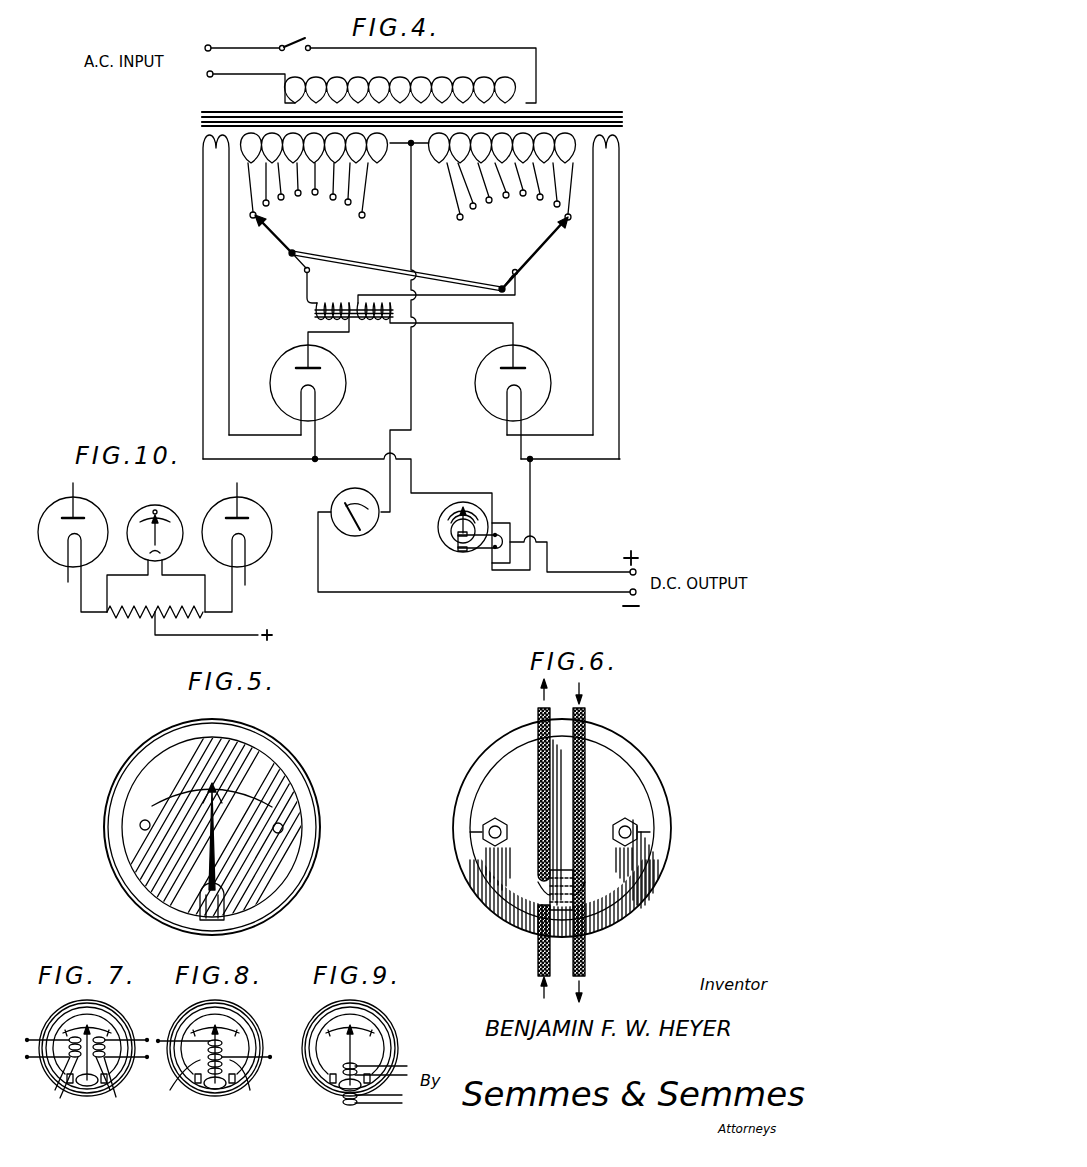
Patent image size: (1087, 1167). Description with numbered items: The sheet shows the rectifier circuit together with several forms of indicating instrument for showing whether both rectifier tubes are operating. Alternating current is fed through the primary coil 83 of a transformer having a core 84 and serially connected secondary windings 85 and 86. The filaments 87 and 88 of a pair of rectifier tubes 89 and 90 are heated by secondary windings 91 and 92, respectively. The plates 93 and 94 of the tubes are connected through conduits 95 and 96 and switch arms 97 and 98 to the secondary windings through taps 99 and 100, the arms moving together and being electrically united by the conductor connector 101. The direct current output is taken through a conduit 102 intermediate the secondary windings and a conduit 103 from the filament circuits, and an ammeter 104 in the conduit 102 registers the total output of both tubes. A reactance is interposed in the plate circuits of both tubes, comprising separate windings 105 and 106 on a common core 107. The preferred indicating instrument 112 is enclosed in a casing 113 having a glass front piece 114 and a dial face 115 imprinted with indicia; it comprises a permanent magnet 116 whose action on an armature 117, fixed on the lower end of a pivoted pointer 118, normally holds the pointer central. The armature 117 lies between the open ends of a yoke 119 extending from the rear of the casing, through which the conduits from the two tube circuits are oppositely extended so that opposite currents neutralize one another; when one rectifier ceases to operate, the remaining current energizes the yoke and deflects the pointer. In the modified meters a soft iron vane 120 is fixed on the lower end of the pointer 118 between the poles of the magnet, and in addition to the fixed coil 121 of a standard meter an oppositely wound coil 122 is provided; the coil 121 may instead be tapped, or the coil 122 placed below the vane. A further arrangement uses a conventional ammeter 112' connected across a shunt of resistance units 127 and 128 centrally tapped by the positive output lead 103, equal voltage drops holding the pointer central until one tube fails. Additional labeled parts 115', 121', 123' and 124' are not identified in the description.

In FIG. 4, the oppositely wound coil 122 is at (300, 42).
In FIG. 7, the oppositely wound coil 122 is at (102, 1082).
In FIG. 4, the primary coil 83 is at (432, 80).
In FIG. 4, the core 84 is at (578, 113).
In FIG. 4, the secondary winding 85 is at (250, 153).
In FIG. 4, the secondary winding 86 is at (574, 158).
In FIG. 4, the filament 87 is at (300, 396).
In FIG. 10, the filament 87 is at (68, 546).
In FIG. 4, the filament 88 is at (508, 400).
In FIG. 10, the filament 88 is at (248, 548).
In FIG. 4, the rectifier tube 89 is at (347, 376).
In FIG. 10, the rectifier tube 89 is at (70, 524).
In FIG. 4, the rectifier tube 90 is at (550, 368).
In FIG. 10, the rectifier tube 90 is at (262, 520).
In FIG. 4, the secondary winding 91 is at (201, 152).
In FIG. 4, the secondary winding 92 is at (622, 150).
In FIG. 4, the plate 93 is at (321, 366).
In FIG. 10, the plate 93 is at (78, 512).
In FIG. 4, the plate 94 is at (510, 367).
In FIG. 10, the plate 94 is at (232, 512).
In FIG. 4, the conduit 95 is at (306, 286).
In FIG. 4, the conduit 96 is at (518, 284).
In FIG. 4, the switch arm 97 is at (274, 238).
In FIG. 4, the switch arm 98 is at (540, 205).
In FIG. 4, the taps 99 is at (315, 205).
In FIG. 4, the taps 100 is at (521, 200).
In FIG. 4, the conductor connector 101 is at (404, 271).
In FIG. 4, the conduit 102 is at (392, 595).
In FIG. 4, the conduit 103 is at (550, 571).
In FIG. 10, the conduit 103 is at (203, 638).
In FIG. 4, the ammeter 104 is at (348, 540).
In FIG. 4, the winding 105 is at (313, 309).
In FIG. 4, the winding 106 is at (379, 325).
In FIG. 4, the common core 107 is at (353, 301).
In FIG. 4, the indicating instrument 112 is at (455, 542).
In FIG. 5, the indicating instrument 112 is at (212, 824).
In FIG. 6, the indicating instrument 112 is at (563, 828).
In FIG. 7, the indicating instrument 112 is at (83, 1063).
In FIG. 10, the conventional ammeter 112' is at (156, 546).
In FIG. 5, the casing 113 is at (308, 798).
In FIG. 6, the casing 113 is at (461, 860).
In FIG. 5, the glass front piece 114 is at (237, 868).
In FIG. 5, the dial face 115 is at (229, 827).
In FIG. 5, the scale arc 115' is at (231, 759).
In FIG. 4, the permanent magnet 116 is at (451, 534).
In FIG. 7, the permanent magnet 116 is at (113, 1028).
In FIG. 8, the permanent magnet 116 is at (243, 1027).
In FIG. 9, the permanent magnet 116 is at (378, 1027).
In FIG. 4, the armature 117 is at (459, 552).
In FIG. 4, the pivoted pointer 118 is at (450, 520).
In FIG. 5, the pivoted pointer 118 is at (207, 862).
In FIG. 7, the pivoted pointer 118 is at (62, 1038).
In FIG. 8, the pivoted pointer 118 is at (235, 1045).
In FIG. 9, the pivoted pointer 118 is at (349, 1050).
In FIG. 4, the yoke 119 is at (487, 553).
In FIG. 6, the yoke 119 is at (549, 898).
In FIG. 7, the soft iron vane 120 is at (87, 1086).
In FIG. 8, the soft iron vane 120 is at (209, 1090).
In FIG. 9, the soft iron vane 120 is at (342, 1092).
In FIG. 7, the fixed coil 121 is at (70, 1082).
In FIG. 8, the fixed coil 121 is at (173, 1084).
In FIG. 8, the hairspring 121' is at (252, 1090).
In FIG. 6, the terminal nut 123' is at (565, 839).
In FIG. 6, the terminal 124' is at (569, 831).
In FIG. 10, the resistance unit 127 is at (138, 600).
In FIG. 10, the resistance unit 128 is at (182, 604).